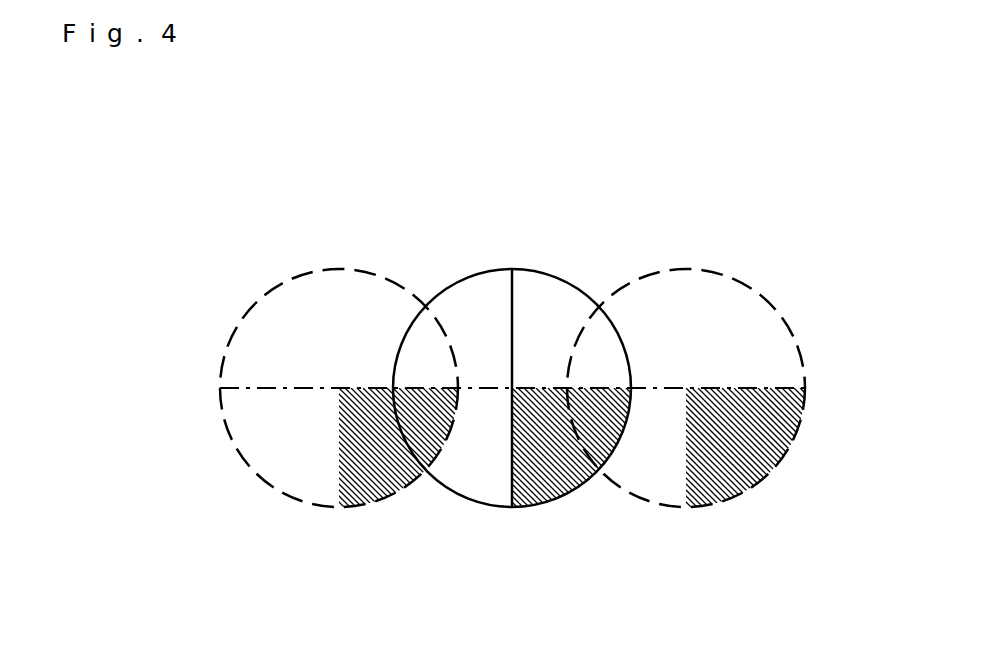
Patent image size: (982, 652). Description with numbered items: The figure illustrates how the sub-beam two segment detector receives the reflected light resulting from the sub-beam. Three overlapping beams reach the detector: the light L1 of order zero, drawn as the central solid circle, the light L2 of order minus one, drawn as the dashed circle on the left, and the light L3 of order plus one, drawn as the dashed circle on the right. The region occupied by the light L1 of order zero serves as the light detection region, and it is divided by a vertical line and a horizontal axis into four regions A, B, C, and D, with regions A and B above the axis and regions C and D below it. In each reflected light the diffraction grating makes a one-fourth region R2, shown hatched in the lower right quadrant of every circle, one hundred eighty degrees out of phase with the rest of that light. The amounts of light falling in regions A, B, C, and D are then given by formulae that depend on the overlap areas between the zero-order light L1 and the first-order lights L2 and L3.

The light of order 0 L1 is at (482, 272).
The light of order −1 L2 is at (268, 292).
The light of order +1 L3 is at (774, 310).
The one-fourth region R2 is at (373, 455).
The region A is at (452, 328).
The region B is at (571, 328).
The region C is at (452, 447).
The region D is at (571, 447).